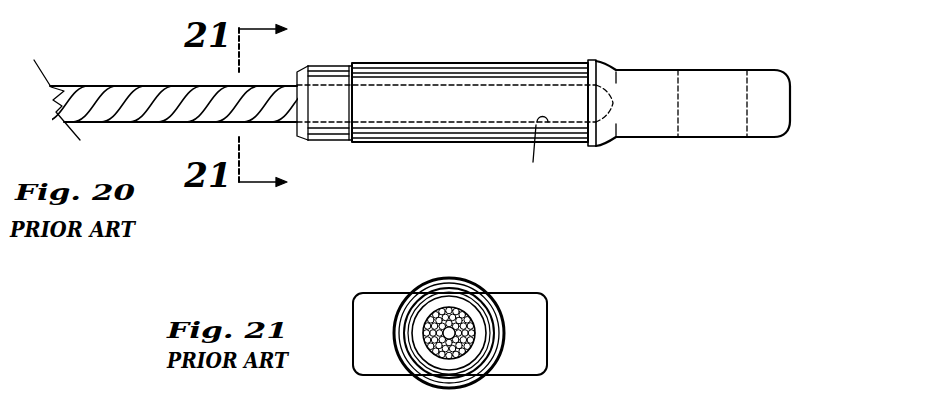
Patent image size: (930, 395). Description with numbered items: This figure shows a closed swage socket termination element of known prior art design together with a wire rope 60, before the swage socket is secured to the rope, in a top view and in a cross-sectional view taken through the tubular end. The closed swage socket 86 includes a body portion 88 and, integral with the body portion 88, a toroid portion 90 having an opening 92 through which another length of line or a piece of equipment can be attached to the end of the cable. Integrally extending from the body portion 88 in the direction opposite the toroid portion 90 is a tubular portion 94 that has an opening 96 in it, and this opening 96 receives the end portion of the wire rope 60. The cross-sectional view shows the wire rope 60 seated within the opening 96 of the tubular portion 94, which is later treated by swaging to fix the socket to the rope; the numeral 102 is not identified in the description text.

In FIG. 20, the wire rope 60 is at (106, 100).
In FIG. 21, the wire rope 60 is at (430, 313).
In FIG. 20, the closed swage socket 86 is at (794, 60).
In FIG. 21, the closed swage socket 86 is at (342, 295).
In FIG. 20, the body portion 88 is at (625, 98).
In FIG. 20, the toroid portion 90 is at (765, 92).
In FIG. 21, the toroid portion 90 is at (525, 345).
In FIG. 20, the opening 92 is at (745, 113).
In FIG. 20, the tubular portion 94 is at (507, 78).
In FIG. 21, the tubular portion 94 is at (443, 285).
In FIG. 20, the opening 96 is at (535, 156).
In FIG. 21, the opening 96 is at (462, 312).
In FIG. 20, the swaged sleeve section 102 is at (397, 72).